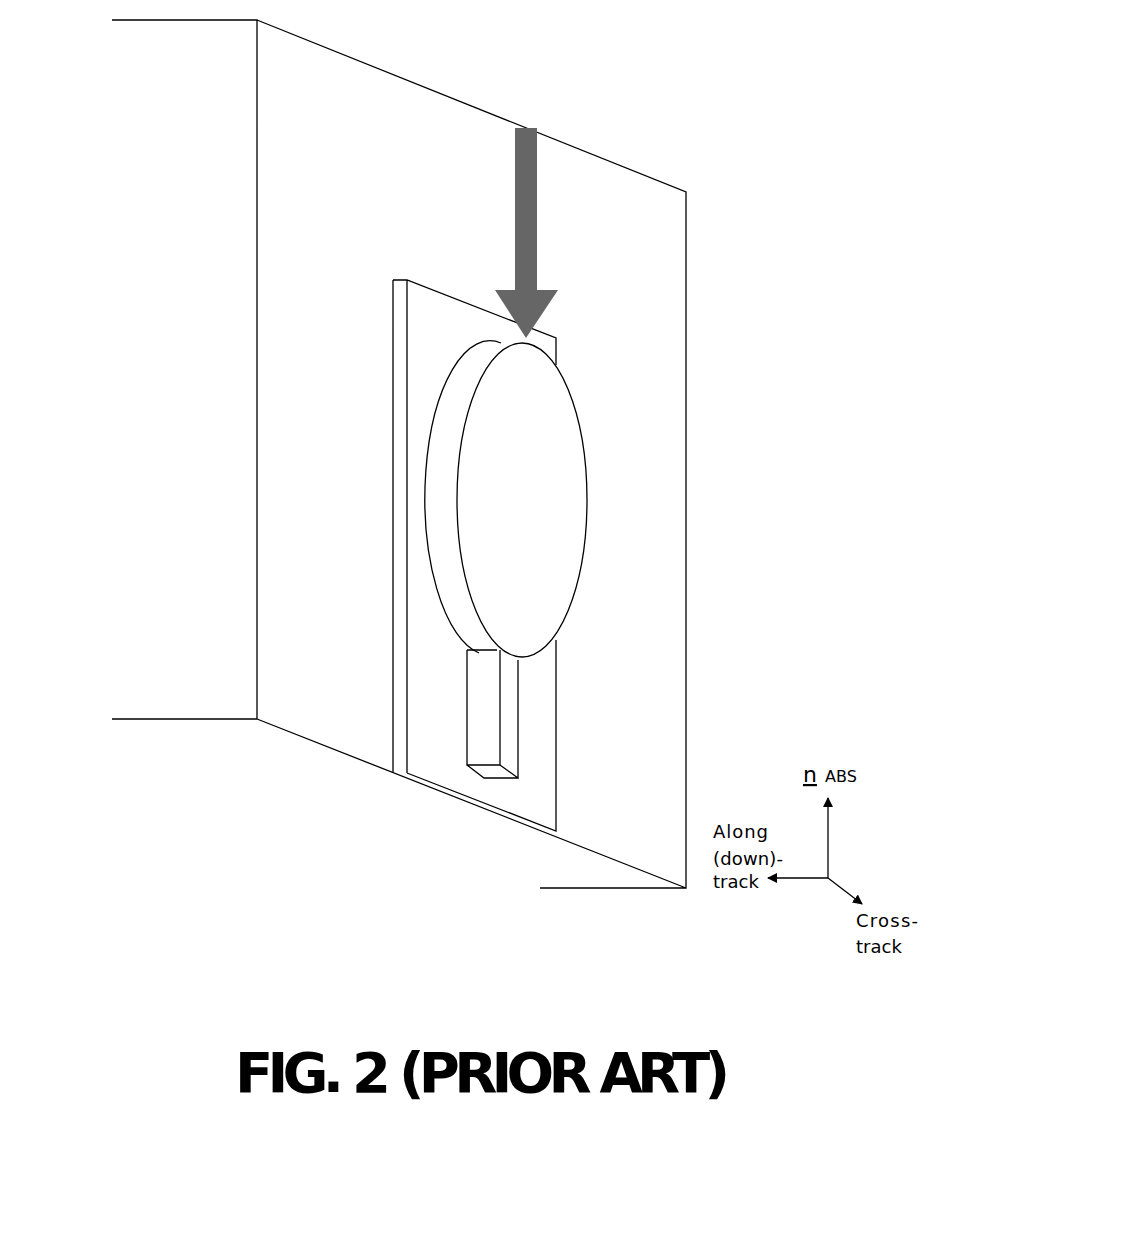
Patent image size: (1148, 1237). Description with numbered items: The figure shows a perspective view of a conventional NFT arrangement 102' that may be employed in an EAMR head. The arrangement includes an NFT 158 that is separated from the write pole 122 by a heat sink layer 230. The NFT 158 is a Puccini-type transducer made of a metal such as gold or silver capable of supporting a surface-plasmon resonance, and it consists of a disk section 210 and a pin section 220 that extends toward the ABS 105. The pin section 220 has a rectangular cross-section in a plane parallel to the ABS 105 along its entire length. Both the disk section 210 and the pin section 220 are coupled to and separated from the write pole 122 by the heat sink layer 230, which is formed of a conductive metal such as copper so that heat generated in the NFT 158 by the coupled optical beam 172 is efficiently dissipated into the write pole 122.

The conventional NFT arrangement 102' is at (656, 47).
The write pole 122 is at (399, 454).
The coupled optical beam 172 is at (527, 219).
The NFT 158 is at (585, 415).
The disk section 210 is at (557, 512).
The pin section 220 is at (513, 717).
The heat sink layer 230 is at (460, 313).
The ABS 105 is at (555, 853).